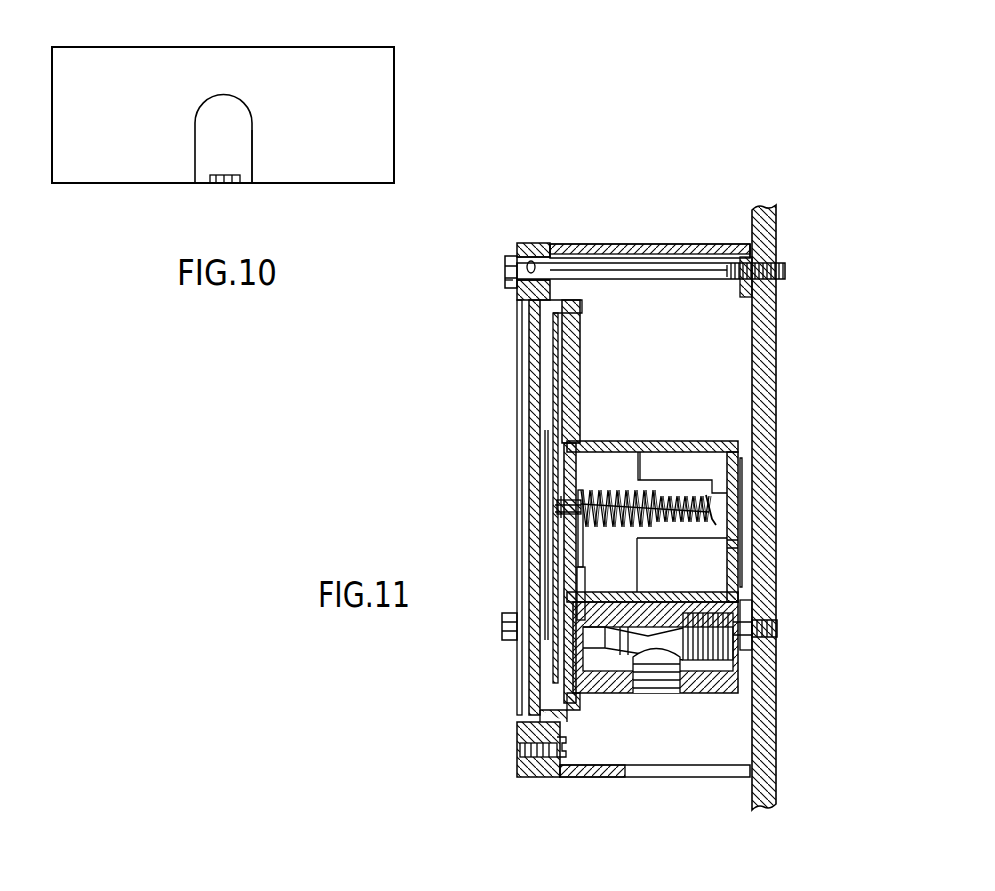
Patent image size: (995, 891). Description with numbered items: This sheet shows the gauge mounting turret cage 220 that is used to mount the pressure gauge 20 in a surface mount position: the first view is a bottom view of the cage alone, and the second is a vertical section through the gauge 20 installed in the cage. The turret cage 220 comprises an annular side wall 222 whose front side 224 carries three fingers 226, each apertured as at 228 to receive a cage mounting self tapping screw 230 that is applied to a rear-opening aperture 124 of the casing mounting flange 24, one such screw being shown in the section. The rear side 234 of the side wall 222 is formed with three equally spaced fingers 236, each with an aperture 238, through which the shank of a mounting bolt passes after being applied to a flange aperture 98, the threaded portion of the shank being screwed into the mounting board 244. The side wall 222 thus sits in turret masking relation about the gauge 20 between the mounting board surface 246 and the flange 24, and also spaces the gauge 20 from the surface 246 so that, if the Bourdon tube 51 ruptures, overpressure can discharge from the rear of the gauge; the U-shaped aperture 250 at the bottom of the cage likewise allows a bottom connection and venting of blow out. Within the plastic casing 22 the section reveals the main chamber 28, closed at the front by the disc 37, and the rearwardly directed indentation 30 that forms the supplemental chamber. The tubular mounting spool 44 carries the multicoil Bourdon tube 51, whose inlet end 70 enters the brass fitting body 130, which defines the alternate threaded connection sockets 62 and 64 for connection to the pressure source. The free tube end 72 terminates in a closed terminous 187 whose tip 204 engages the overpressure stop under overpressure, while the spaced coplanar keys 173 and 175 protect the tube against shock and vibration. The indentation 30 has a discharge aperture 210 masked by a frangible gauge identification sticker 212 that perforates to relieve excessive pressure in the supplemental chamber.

In FIG. 11, the pressure gauge 20 is at (500, 380).
In FIG. 11, the casing 22 is at (580, 378).
In FIG. 11, the forward annular mounting flange 24 is at (517, 247).
In FIG. 11, the main chamber 28 is at (548, 347).
In FIG. 11, the rearwardly directed indentation 30 is at (688, 441).
In FIG. 11, the disc 37 is at (530, 431).
In FIG. 11, the tubular mounting spool 44 is at (580, 490).
In FIG. 11, the Bourdon tube 51 is at (632, 490).
In FIG. 11, the threaded connection socket 62 is at (722, 648).
In FIG. 11, the threaded connection socket 64 is at (668, 683).
In FIG. 11, the Bourdon tube end 70 is at (582, 618).
In FIG. 11, the tube end 72 is at (712, 514).
In FIG. 11, the flange aperture 98 is at (532, 258).
In FIG. 11, the rear aperture 124 is at (518, 755).
In FIG. 11, the fitting body 130 is at (722, 687).
In FIG. 11, the key 173 is at (712, 463).
In FIG. 11, the key 175 is at (743, 562).
In FIG. 11, the tube closed terminous 187 is at (708, 520).
In FIG. 11, the tip 204 is at (708, 532).
In FIG. 11, the aperture 210 is at (733, 563).
In FIG. 11, the gauge identification sticker 212 is at (740, 502).
In FIG. 10, the turret cage 220 is at (108, 30).
In FIG. 11, the turret cage 220 is at (600, 242).
In FIG. 10, the annular side wall 222 is at (365, 128).
In FIG. 11, the annular side wall 222 is at (635, 244).
In FIG. 10, the front side 224 is at (362, 47).
In FIG. 11, the front side 224 is at (545, 243).
In FIG. 10, the finger 226 is at (211, 183).
In FIG. 11, the finger 226 is at (547, 778).
In FIG. 10, the finger aperture 228 is at (224, 174).
In FIG. 11, the self tapping screw 230 is at (570, 740).
In FIG. 10, the rear side 234 is at (346, 184).
In FIG. 11, the rear side 234 is at (755, 252).
In FIG. 11, the finger 236 is at (752, 300).
In FIG. 11, the finger aperture 238 is at (730, 283).
In FIG. 11, the mounting board 244 is at (766, 200).
In FIG. 11, the mounting board surface 246 is at (752, 382).
In FIG. 10, the U-shaped aperture 250 is at (247, 145).
In FIG. 11, the U-shaped aperture 250 is at (682, 777).